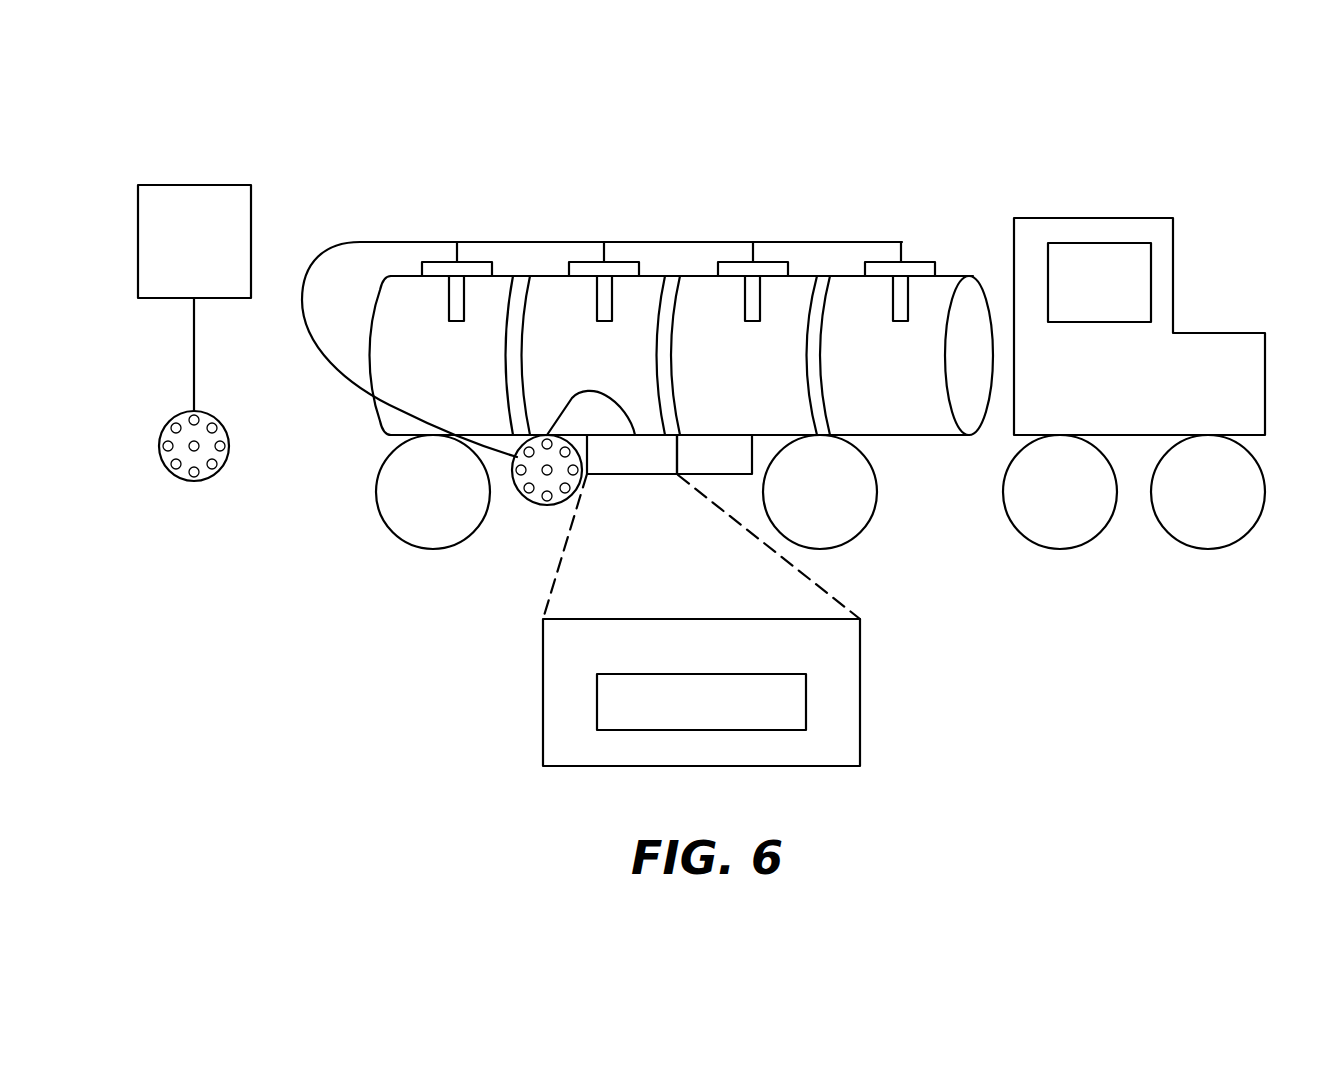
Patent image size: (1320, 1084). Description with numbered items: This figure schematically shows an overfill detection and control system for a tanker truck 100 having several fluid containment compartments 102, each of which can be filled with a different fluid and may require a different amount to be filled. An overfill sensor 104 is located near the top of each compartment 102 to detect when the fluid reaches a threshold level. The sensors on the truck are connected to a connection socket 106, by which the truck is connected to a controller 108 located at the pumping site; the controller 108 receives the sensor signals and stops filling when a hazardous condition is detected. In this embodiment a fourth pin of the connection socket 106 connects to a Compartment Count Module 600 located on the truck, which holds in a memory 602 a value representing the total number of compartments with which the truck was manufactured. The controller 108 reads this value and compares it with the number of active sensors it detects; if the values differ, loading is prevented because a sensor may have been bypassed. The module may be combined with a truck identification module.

The tanker truck 100 is at (1152, 128).
The fluid containment compartment 102 is at (452, 368).
The overfill sensor 104 is at (908, 300).
The connection socket 106 is at (212, 473).
The controller 108 is at (175, 254).
The Compartment Count Module 600 is at (861, 652).
The memory 602 is at (807, 700).